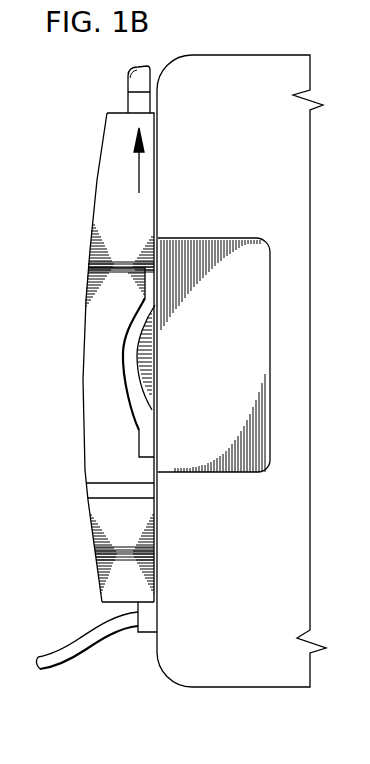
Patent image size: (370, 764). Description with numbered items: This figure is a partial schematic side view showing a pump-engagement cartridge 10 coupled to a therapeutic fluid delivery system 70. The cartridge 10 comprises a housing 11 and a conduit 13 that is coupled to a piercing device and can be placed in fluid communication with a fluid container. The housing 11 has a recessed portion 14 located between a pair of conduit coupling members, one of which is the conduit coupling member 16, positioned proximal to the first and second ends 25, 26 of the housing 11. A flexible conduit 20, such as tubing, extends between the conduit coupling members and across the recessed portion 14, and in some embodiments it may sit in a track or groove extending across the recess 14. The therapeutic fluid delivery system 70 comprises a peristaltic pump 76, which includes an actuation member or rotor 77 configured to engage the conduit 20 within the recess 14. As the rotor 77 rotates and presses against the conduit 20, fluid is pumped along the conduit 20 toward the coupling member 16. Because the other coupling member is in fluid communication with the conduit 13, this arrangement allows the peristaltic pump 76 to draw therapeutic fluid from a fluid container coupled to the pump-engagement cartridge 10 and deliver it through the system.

The pump-engagement cartridge 10 is at (84, 403).
The housing 11 is at (90, 533).
The conduit 13 is at (50, 672).
The recessed portion 14 is at (147, 440).
The conduit coupling member 16 is at (128, 100).
The conduit 20 is at (125, 353).
The first end 25 is at (103, 604).
The second end 26 is at (107, 112).
The therapeutic fluid delivery system 70 is at (240, 56).
The peristaltic pump 76 is at (224, 368).
The rotor 77 is at (150, 408).